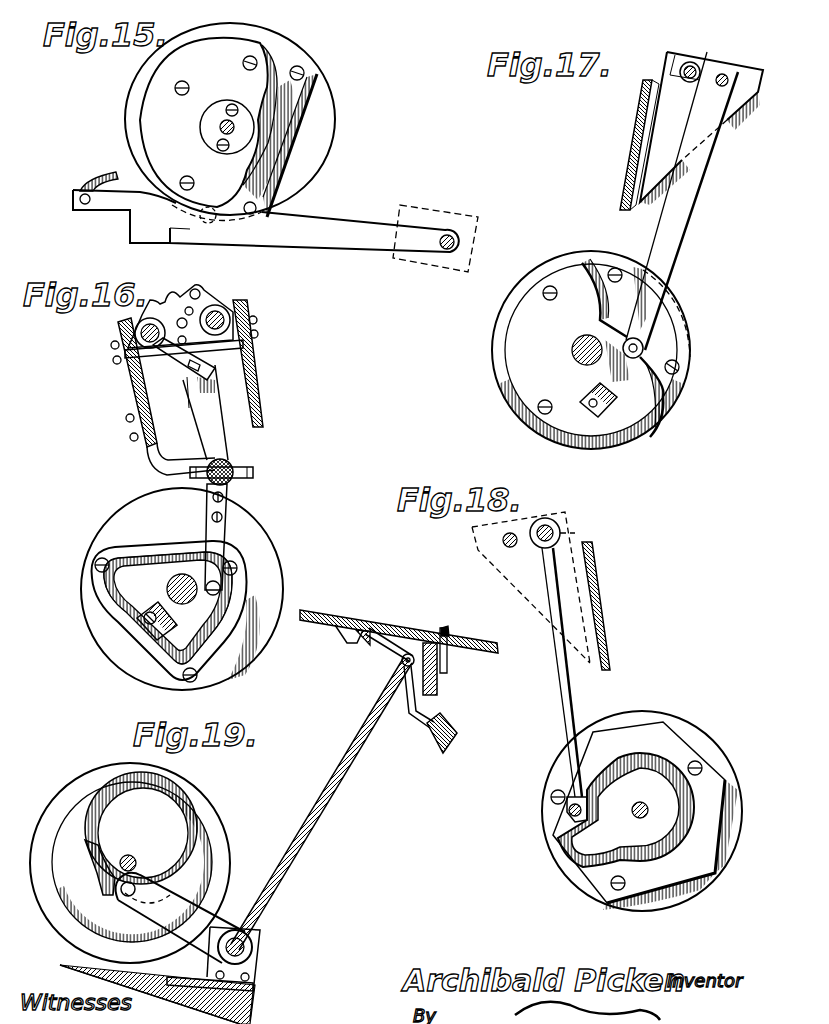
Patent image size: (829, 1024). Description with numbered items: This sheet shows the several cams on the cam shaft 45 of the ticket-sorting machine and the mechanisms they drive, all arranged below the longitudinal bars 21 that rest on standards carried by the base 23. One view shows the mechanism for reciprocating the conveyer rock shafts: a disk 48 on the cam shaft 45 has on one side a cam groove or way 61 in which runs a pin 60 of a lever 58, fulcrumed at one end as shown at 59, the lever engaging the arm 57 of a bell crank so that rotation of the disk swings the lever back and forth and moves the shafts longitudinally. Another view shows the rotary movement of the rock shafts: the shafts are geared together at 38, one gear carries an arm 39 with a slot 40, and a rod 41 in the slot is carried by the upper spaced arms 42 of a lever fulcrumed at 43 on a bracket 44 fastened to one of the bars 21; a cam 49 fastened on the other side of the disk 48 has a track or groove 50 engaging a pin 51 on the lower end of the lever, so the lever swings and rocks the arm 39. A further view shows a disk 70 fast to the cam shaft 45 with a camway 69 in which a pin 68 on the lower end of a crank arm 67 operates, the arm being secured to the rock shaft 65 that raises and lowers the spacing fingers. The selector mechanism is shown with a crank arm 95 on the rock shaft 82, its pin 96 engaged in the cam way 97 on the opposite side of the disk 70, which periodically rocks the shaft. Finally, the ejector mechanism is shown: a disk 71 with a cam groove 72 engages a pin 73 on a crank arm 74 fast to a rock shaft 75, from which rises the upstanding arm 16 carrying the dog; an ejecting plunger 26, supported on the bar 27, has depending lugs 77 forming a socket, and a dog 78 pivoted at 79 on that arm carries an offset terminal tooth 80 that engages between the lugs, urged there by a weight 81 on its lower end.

In FIG. 19, the connecting rod 16 is at (318, 822).
In FIG. 17, the longitudinal bars 21 is at (638, 117).
In FIG. 16, the longitudinal bars 21 is at (128, 375).
In FIG. 18, the longitudinal bars 21 is at (597, 578).
In FIG. 19, the base 23 is at (253, 1003).
In FIG. 19, the ejecting plunger 26 is at (407, 637).
In FIG. 19, the bar 27 is at (440, 688).
In FIG. 16, the gearing 38 is at (172, 298).
In FIG. 16, the arm 39 is at (177, 370).
In FIG. 16, the slot 40 is at (188, 395).
In FIG. 16, the rod 41 is at (215, 371).
In FIG. 16, the upper spaced arms of lever 42 is at (213, 425).
In FIG. 16, the fulcrum 43 is at (235, 485).
In FIG. 16, the bracket 44 is at (147, 467).
In FIG. 15, the cam shaft 45 is at (220, 127).
In FIG. 17, the cam shaft 45 is at (572, 360).
In FIG. 16, the cam shaft 45 is at (167, 590).
In FIG. 19, the cam shaft 45 is at (140, 847).
In FIG. 18, the cam shaft 45 is at (647, 795).
In FIG. 15, the disk 48 is at (318, 148).
In FIG. 16, the disk 48 is at (103, 541).
In FIG. 16, the cam 49 is at (103, 640).
In FIG. 16, the track or groove 50 is at (110, 600).
In FIG. 16, the pin 51 is at (221, 588).
In FIG. 15, the arm of bell crank 57 is at (100, 182).
In FIG. 15, the lever 58 is at (112, 207).
In FIG. 15, the fulcrum 59 is at (456, 236).
In FIG. 15, the pin 60 is at (212, 220).
In FIG. 15, the cam groove or way 61 is at (247, 181).
In FIG. 17, the rock shaft 65 is at (728, 73).
In FIG. 18, the rock shaft 65 is at (505, 547).
In FIG. 17, the crank arm 67 is at (690, 190).
In FIG. 17, the pin 68 is at (630, 367).
In FIG. 17, the camway 69 is at (597, 317).
In FIG. 17, the disk 70 is at (672, 321).
In FIG. 18, the disk 70 is at (723, 768).
In FIG. 19, the disk 71 is at (238, 848).
In FIG. 19, the cam groove 72 is at (177, 802).
In FIG. 19, the pin 73 is at (130, 893).
In FIG. 19, the crank arm 74 is at (180, 918).
In FIG. 19, the rock shaft 75 is at (252, 945).
In FIG. 19, the depending lugs 77 is at (347, 643).
In FIG. 19, the dog 78 is at (390, 668).
In FIG. 19, the pivot 79 is at (413, 656).
In FIG. 19, the offset terminal tooth 80 is at (363, 633).
In FIG. 19, the weight 81 is at (457, 720).
In FIG. 17, the rock shaft 82 is at (692, 62).
In FIG. 18, the rock shaft 82 is at (549, 525).
In FIG. 18, the crank arm 95 is at (563, 698).
In FIG. 18, the pin 96 is at (568, 813).
In FIG. 18, the cam way 97 is at (640, 753).